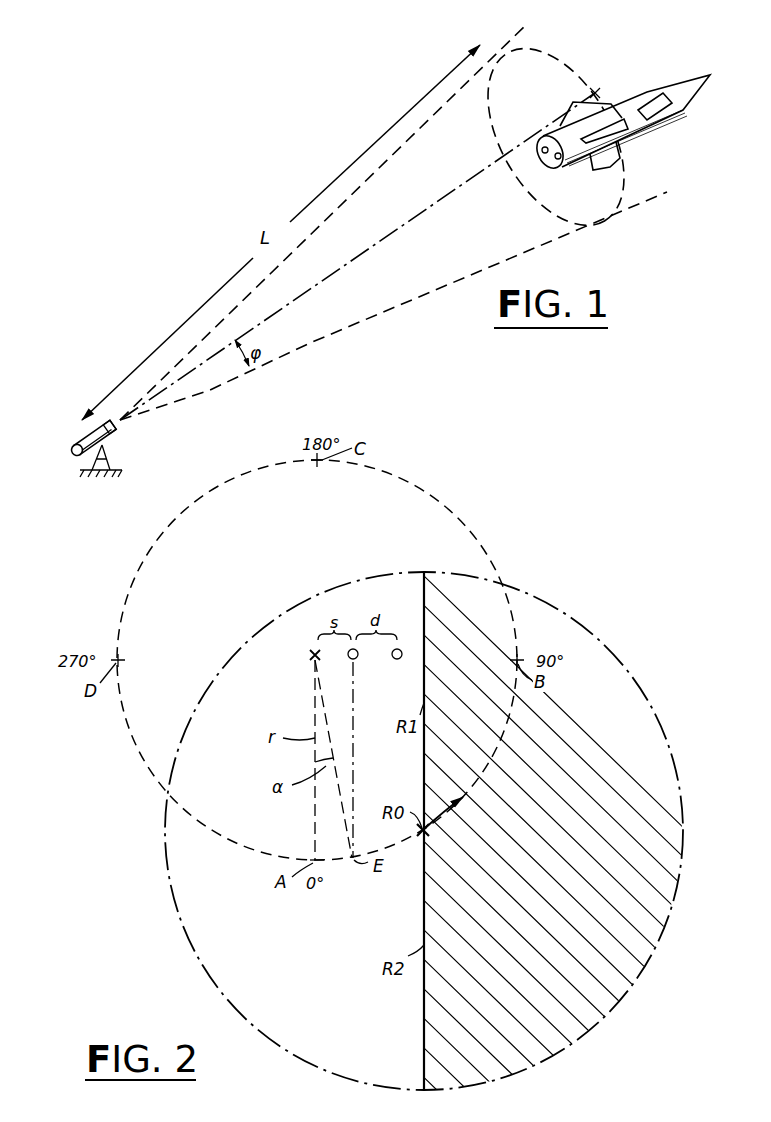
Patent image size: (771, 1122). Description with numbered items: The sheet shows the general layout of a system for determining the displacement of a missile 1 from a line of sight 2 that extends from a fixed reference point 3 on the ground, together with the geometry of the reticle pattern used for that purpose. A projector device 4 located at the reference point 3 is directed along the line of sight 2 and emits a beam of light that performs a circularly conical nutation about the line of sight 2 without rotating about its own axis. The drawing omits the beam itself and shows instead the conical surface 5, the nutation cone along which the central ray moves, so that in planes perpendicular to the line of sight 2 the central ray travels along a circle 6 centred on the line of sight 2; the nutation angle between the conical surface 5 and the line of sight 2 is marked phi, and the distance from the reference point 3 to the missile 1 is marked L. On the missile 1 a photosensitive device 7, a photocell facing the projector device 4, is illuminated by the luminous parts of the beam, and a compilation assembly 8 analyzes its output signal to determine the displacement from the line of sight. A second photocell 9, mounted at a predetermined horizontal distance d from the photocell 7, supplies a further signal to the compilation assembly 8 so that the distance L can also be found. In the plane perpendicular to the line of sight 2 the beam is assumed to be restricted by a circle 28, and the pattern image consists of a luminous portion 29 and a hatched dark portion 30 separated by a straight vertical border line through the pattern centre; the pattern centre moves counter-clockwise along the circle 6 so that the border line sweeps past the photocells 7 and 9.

In FIG. 1, the missile 1 is at (648, 90).
In FIG. 1, the line of sight 2 is at (366, 250).
In FIG. 2, the line of sight 2 is at (312, 653).
In FIG. 1, the reference point 3 is at (108, 458).
In FIG. 1, the projector device 4 is at (78, 446).
In FIG. 1, the conical surface 5 is at (400, 148).
In FIG. 1, the circle 6 is at (553, 58).
In FIG. 2, the circle 6 is at (446, 503).
In FIG. 1, the photosensitive device 7 is at (540, 152).
In FIG. 2, the photosensitive device 7 is at (357, 660).
In FIG. 1, the compilation assembly 8 is at (672, 116).
In FIG. 1, the second photocell 9 is at (556, 160).
In FIG. 2, the second photocell 9 is at (399, 660).
In FIG. 2, the circle 28 is at (590, 626).
In FIG. 2, the luminous portion 29 is at (196, 930).
In FIG. 2, the dark portion 30 is at (605, 1005).